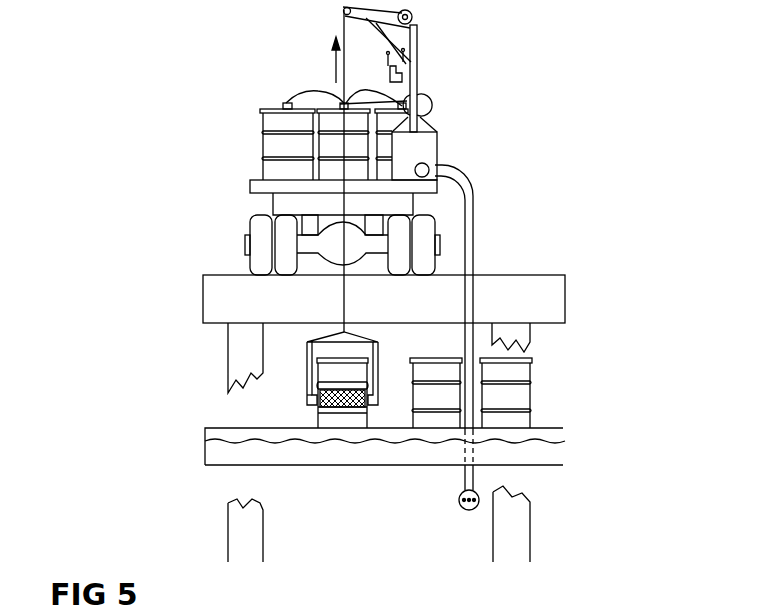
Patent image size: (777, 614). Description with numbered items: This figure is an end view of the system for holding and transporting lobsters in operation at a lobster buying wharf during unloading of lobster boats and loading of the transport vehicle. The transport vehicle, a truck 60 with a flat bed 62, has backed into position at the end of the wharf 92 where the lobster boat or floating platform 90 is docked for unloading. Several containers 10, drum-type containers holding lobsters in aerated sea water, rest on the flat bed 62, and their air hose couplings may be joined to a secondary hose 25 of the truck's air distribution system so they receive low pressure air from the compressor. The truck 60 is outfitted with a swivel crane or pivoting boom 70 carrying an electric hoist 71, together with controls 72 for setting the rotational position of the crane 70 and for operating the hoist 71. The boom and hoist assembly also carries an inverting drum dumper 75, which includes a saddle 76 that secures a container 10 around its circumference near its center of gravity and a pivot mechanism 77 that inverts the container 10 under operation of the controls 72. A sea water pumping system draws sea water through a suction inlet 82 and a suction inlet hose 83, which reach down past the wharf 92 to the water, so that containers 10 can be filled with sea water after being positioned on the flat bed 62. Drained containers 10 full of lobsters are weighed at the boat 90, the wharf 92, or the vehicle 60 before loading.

The container 10 is at (262, 112).
The secondary hose 25 is at (300, 97).
The truck 60 is at (260, 198).
The flat bed 62 is at (252, 186).
The swivel crane 70 is at (418, 72).
The electric hoist 71 is at (413, 18).
The controls 72 is at (390, 80).
The inverting drum dumper 75 is at (307, 346).
The saddle 76 is at (367, 401).
The pivot mechanism 77 is at (308, 398).
The sea water suction inlet 82 is at (460, 504).
The sea water suction inlet hose 83 is at (474, 240).
The floating platform 90 is at (210, 454).
The wharf 92 is at (427, 310).